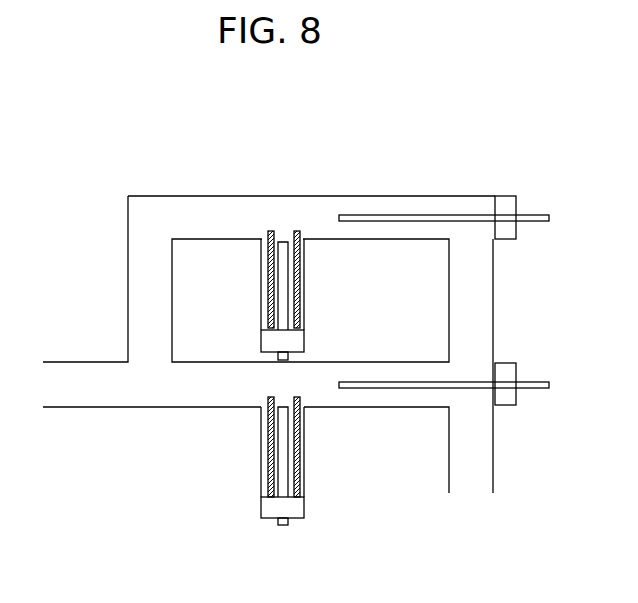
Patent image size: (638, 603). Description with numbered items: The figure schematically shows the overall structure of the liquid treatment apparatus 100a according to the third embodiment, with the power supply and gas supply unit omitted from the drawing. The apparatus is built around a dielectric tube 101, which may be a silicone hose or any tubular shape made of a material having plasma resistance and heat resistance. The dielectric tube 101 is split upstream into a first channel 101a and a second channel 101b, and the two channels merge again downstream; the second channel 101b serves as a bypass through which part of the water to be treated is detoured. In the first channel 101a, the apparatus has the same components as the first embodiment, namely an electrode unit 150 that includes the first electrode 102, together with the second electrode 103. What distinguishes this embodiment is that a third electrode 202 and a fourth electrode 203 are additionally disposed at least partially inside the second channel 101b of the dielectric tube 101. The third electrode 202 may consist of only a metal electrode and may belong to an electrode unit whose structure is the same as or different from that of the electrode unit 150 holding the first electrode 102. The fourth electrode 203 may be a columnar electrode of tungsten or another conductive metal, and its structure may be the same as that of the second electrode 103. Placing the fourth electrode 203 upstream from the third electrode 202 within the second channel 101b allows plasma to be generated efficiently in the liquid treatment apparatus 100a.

The liquid treatment apparatus 100a is at (83, 110).
The dielectric tube 101 is at (128, 303).
The first channel 101a is at (217, 398).
The second channel 101b is at (401, 205).
The first electrode 102 is at (280, 525).
The second electrode 103 is at (510, 393).
The electrode unit 150 is at (284, 367).
The third electrode 202 is at (280, 242).
The fourth electrode 203 is at (510, 228).